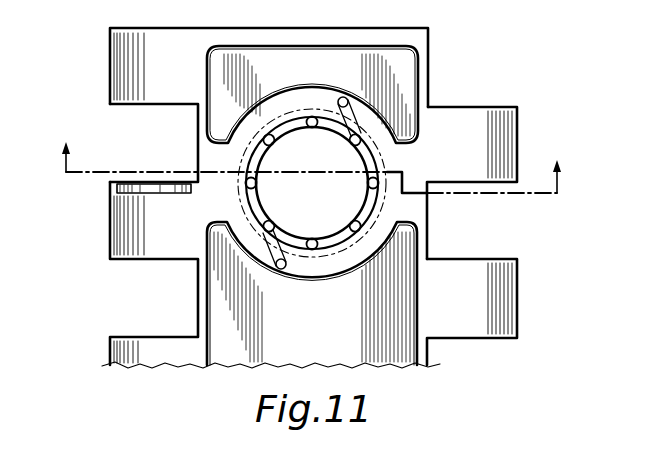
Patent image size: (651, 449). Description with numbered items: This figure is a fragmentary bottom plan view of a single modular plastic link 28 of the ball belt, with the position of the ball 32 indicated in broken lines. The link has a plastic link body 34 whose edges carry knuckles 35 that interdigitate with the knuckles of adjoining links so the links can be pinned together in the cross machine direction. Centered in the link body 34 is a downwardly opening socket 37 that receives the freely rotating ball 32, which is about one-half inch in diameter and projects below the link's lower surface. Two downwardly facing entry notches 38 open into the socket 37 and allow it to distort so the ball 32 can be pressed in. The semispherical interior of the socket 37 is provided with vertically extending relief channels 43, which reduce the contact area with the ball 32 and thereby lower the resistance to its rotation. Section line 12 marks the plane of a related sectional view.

The section line 12 is at (313, 181).
The modular plastic link 28 is at (162, 260).
The ball 32 is at (383, 154).
The link body 34 is at (110, 68).
The knuckle 35 is at (158, 108).
The socket 37 is at (280, 140).
The entry notch 38 is at (339, 100).
The relief channel 43 is at (370, 183).